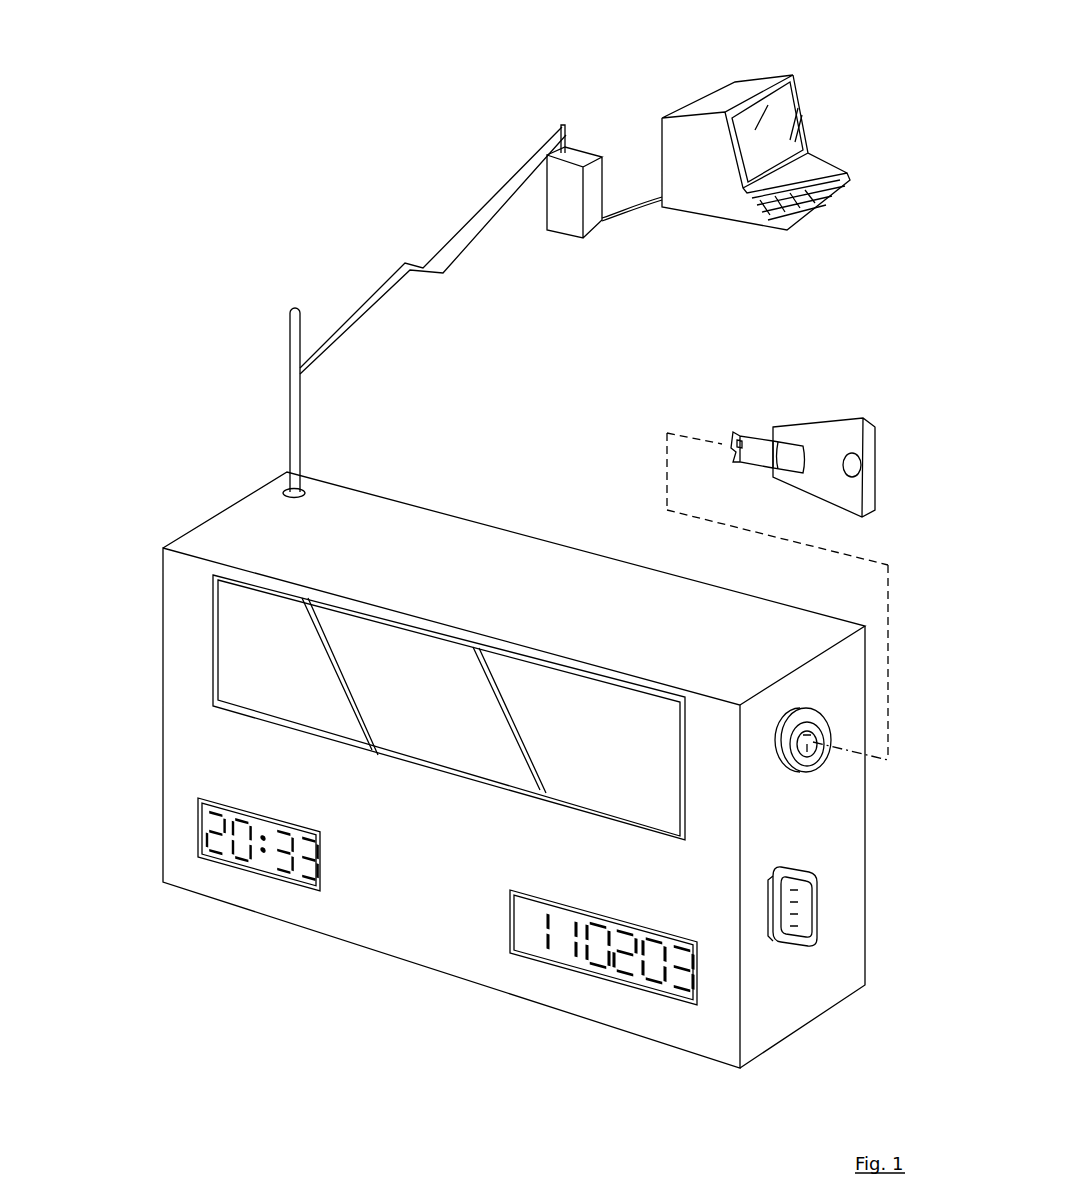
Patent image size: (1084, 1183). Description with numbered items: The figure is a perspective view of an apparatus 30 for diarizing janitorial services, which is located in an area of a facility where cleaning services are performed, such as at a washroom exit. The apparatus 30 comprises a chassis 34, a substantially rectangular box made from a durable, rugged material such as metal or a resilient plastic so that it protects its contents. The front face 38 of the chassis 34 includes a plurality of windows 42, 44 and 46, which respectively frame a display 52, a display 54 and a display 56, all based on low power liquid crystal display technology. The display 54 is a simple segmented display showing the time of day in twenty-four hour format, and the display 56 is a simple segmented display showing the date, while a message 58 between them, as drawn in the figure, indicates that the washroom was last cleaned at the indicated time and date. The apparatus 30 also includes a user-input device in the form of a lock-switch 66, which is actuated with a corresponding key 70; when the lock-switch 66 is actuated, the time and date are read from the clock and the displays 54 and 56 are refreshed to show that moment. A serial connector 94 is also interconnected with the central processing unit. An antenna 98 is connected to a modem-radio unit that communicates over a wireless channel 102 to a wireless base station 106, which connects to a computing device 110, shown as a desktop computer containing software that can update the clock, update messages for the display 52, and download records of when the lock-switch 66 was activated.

The apparatus for diarizing janitorial services 30 is at (270, 1013).
The chassis 34 is at (158, 725).
The front face 38 is at (414, 901).
The window 42 is at (213, 657).
The window 44 is at (195, 837).
The window 46 is at (505, 955).
The display 52 is at (267, 602).
The display 54 is at (210, 820).
The display 56 is at (662, 982).
The message text 58 is at (680, 900).
The lock-switch 66 is at (827, 720).
The key 70 is at (868, 410).
The serial connector 94 is at (807, 930).
The antenna 98 is at (287, 343).
The wireless channel 102 is at (393, 277).
The wireless base station 106 is at (557, 183).
The computing device 110 is at (703, 97).